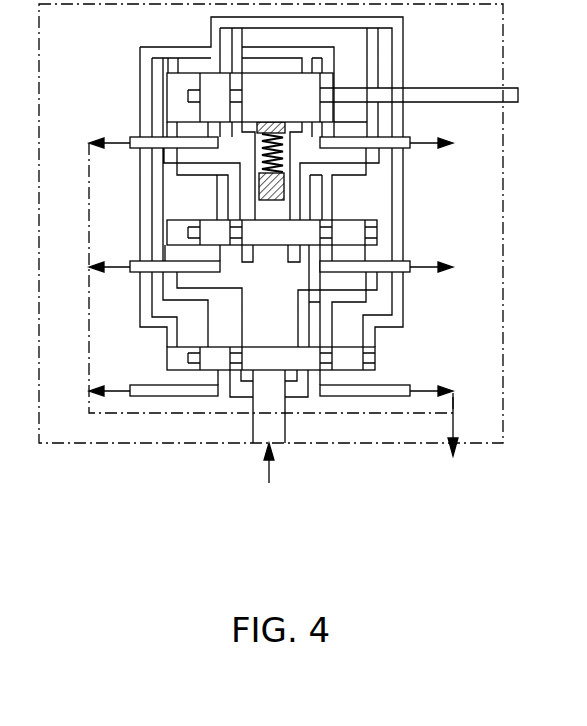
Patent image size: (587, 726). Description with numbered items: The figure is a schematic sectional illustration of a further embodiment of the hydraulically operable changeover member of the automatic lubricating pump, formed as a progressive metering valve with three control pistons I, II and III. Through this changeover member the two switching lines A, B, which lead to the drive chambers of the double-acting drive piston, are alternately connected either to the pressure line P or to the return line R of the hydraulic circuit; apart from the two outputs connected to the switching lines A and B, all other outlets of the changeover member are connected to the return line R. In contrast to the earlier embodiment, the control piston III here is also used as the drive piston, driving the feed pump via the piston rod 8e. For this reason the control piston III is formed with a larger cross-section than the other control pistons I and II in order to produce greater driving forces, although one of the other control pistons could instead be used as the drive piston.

The piston rod 8e is at (455, 88).
The switching line A is at (376, 162).
The switching line B is at (165, 170).
The control piston I is at (185, 347).
The control piston II is at (185, 220).
The control piston III is at (197, 72).
The pressure line P is at (255, 475).
The return line R is at (438, 450).